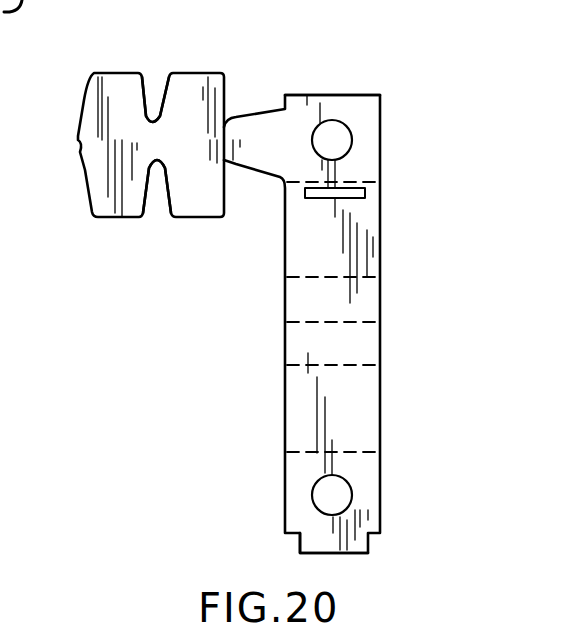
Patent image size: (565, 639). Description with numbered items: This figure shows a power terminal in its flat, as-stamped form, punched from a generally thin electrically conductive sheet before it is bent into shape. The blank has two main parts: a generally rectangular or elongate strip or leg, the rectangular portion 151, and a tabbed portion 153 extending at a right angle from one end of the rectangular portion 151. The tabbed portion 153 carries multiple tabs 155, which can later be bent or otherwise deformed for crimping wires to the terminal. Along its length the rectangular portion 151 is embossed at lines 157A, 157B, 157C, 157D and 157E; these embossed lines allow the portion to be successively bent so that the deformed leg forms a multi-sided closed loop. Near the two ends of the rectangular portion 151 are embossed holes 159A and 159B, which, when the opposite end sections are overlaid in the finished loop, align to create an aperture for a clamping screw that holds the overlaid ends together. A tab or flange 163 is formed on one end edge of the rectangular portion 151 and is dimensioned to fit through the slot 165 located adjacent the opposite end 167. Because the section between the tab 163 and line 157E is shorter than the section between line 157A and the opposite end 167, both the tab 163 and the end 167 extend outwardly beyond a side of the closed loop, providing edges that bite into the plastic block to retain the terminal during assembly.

The rectangular portion 151 is at (302, 235).
The tabbed portion 153 is at (70, 143).
The tabs 155 is at (185, 73).
The embossed line 157A is at (410, 168).
The embossed line 157B is at (287, 277).
The embossed line 157C is at (287, 322).
The embossed line 157D is at (287, 365).
The embossed line 157E is at (287, 453).
The embossed hole 159A is at (338, 138).
The embossed hole 159B is at (327, 492).
The tab 163 is at (318, 547).
The slot 165 is at (300, 193).
The opposite end 167 is at (337, 95).